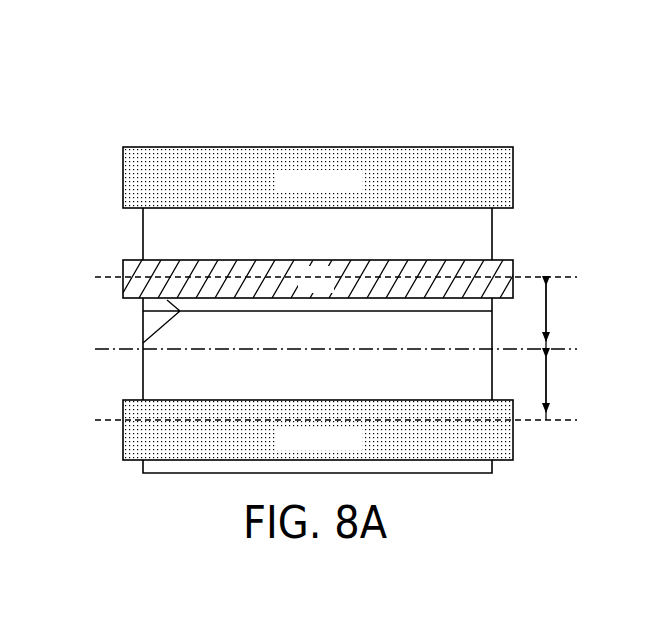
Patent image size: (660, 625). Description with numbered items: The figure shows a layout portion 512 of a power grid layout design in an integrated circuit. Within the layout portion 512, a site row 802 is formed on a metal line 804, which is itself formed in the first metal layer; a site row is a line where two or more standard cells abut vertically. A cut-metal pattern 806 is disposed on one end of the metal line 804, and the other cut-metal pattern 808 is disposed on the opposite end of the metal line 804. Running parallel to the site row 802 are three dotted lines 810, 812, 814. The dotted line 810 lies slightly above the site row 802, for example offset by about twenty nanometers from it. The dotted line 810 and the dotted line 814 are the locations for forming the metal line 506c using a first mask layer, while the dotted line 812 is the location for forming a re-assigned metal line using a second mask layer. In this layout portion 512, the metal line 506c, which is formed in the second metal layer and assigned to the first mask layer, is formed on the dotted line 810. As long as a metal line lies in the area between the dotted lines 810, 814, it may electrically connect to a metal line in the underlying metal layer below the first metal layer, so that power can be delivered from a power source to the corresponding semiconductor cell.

The layout portion 512 is at (125, 76).
The metal line 506c is at (191, 270).
The site row 802 is at (416, 310).
The metal line 804 is at (483, 231).
The cut-metal pattern 806 is at (503, 176).
The cut-metal pattern 808 is at (500, 446).
The dotted line 810 is at (563, 277).
The dotted line 812 is at (565, 349).
The dotted line 814 is at (565, 420).